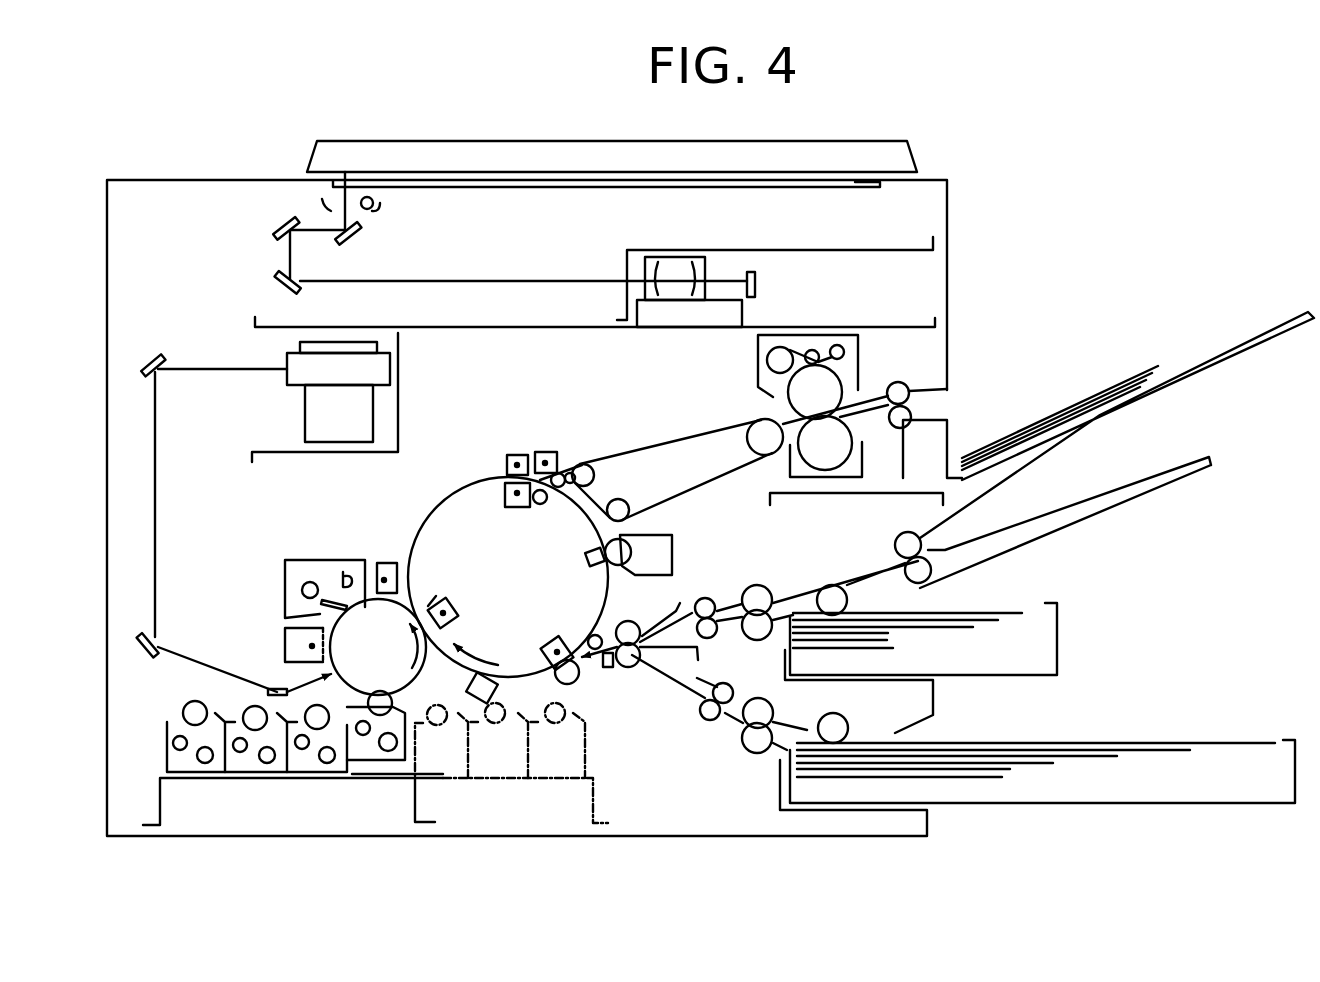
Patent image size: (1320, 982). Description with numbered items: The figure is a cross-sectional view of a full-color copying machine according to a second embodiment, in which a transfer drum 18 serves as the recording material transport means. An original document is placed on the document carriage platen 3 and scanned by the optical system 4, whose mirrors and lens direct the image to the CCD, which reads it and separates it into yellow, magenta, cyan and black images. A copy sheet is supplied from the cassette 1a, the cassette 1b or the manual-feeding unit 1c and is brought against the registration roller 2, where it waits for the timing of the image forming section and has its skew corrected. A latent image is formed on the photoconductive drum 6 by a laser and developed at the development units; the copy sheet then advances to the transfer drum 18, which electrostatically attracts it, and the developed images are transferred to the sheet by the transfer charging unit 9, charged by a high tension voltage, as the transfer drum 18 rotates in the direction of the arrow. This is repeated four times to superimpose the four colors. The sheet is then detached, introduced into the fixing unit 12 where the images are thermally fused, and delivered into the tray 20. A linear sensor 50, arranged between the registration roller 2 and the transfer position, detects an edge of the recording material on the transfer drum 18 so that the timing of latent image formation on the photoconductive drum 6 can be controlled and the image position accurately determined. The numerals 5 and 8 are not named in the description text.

The cassette 1a is at (1213, 805).
The cassette 1b is at (1057, 640).
The manual-feeding unit 1c is at (1153, 487).
The registration roller 2 is at (643, 670).
The document carriage platen 3 is at (855, 188).
The optical system 4 is at (262, 222).
The laser writing unit 5 is at (131, 429).
The photoconductive drum 6 is at (406, 604).
The toner cartridge unit 8 is at (143, 773).
The transfer charging unit 9 is at (452, 605).
The fixing unit 12 is at (860, 363).
The transfer drum 18 is at (463, 483).
The tray 20 is at (1203, 362).
The linear sensor 50 is at (483, 702).
The element CCD is at (757, 287).